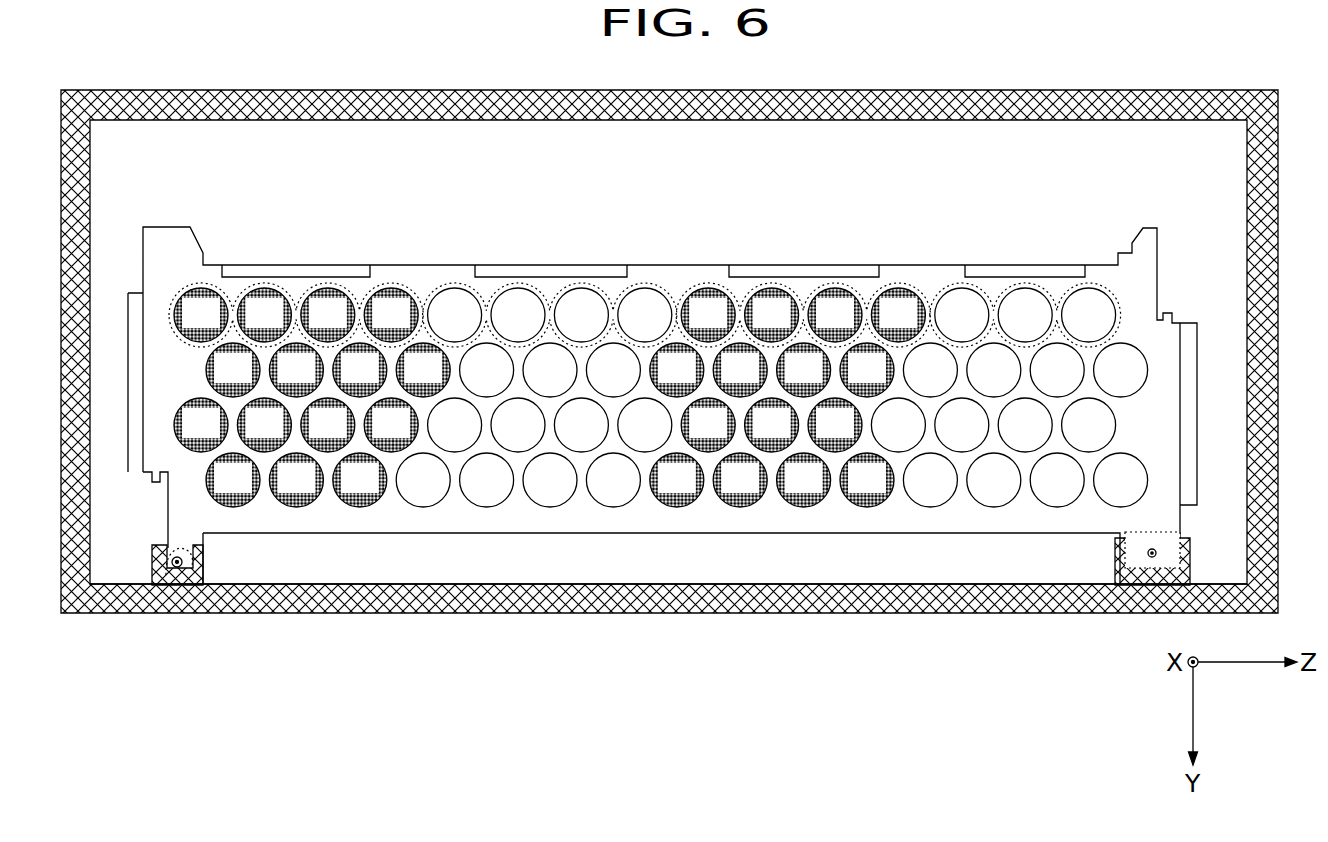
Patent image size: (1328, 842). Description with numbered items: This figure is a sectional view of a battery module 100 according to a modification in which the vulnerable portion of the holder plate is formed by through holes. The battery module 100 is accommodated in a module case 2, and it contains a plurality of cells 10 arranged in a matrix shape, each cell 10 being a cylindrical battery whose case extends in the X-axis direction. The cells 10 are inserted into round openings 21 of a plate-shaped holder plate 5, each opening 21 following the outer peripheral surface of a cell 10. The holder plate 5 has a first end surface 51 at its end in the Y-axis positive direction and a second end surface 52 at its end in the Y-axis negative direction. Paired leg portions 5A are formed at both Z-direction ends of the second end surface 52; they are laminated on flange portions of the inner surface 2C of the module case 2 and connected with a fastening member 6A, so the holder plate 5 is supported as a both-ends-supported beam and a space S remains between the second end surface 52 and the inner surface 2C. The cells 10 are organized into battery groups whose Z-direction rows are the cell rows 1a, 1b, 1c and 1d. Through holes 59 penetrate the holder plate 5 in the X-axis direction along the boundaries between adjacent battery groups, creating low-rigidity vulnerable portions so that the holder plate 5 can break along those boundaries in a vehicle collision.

The module case 2 is at (1168, 106).
The inner surface 2C is at (446, 592).
The battery module 100 is at (646, 243).
The cell 10 is at (187, 328).
The opening 21 is at (208, 286).
The first end surface 51 is at (538, 264).
The through hole 59 is at (421, 271).
The second end surface 52 is at (525, 535).
The holder plate 5 is at (1163, 398).
The leg portion 5A is at (205, 548).
The fastening bolt 6A is at (152, 564).
The cell row 1a is at (170, 292).
The cell row 1b is at (457, 284).
The cell row 1c is at (752, 290).
The cell row 1d is at (1000, 290).
The space S is at (681, 573).